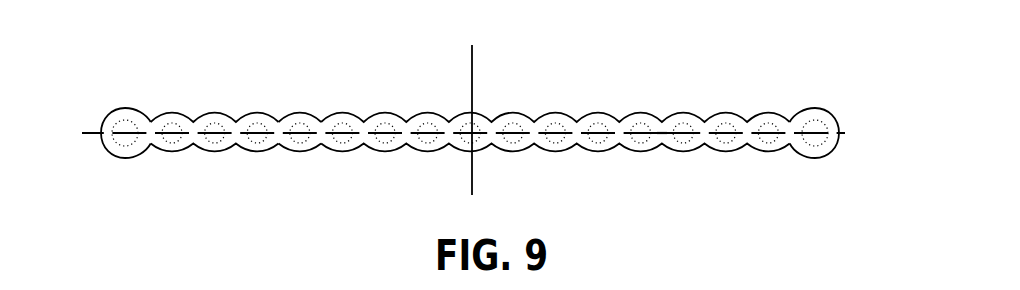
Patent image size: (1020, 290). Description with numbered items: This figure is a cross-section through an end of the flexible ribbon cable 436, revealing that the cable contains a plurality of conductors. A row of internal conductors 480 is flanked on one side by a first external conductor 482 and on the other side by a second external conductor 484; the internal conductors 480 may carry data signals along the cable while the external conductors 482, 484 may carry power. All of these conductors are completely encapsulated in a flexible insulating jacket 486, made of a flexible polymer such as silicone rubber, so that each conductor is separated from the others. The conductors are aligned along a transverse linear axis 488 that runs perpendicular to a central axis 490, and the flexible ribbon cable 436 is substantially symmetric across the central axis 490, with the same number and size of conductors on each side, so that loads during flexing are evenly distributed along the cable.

The flexible ribbon cable 436 is at (281, 87).
The internal conductors 480 is at (645, 135).
The first external conductor 482 is at (125, 138).
The second external conductor 484 is at (815, 138).
The flexible insulating jacket 486 is at (300, 145).
The transverse linear axis 488 is at (663, 133).
The central axis 490 is at (472, 75).